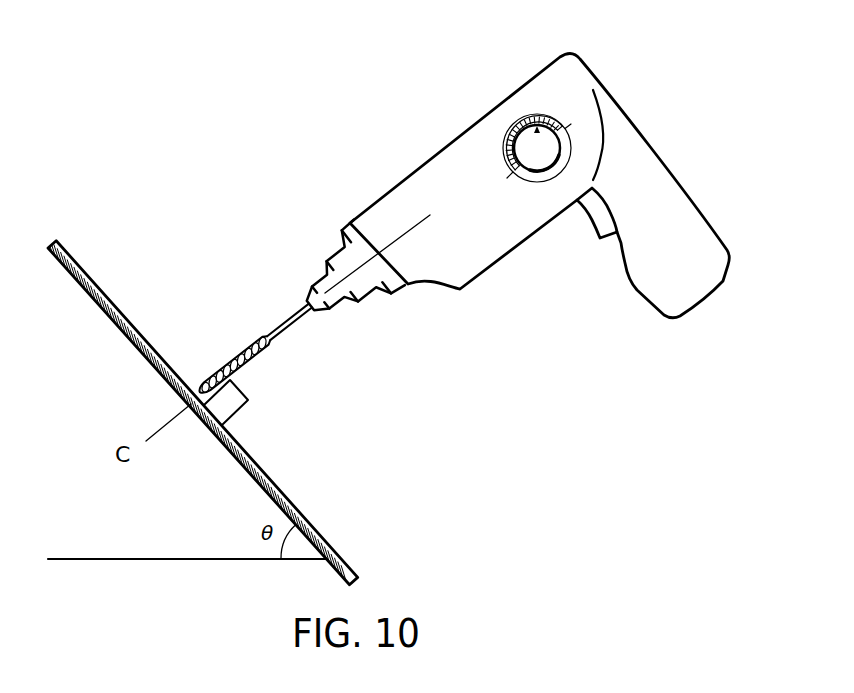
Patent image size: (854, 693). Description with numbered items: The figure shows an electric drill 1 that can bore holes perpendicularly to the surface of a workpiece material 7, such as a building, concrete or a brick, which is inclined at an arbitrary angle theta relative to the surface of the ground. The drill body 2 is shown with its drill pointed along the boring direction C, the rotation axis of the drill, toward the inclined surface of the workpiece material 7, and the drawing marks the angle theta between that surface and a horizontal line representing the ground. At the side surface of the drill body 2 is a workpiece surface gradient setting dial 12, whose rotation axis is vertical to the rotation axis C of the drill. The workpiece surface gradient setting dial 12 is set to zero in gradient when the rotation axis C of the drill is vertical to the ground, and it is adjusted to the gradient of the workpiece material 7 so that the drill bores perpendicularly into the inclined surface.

The electric drill 1 is at (451, 223).
The drill body 2 is at (523, 241).
The workpiece material 7 is at (73, 262).
The workpiece surface gradient setting dial 12 is at (506, 134).